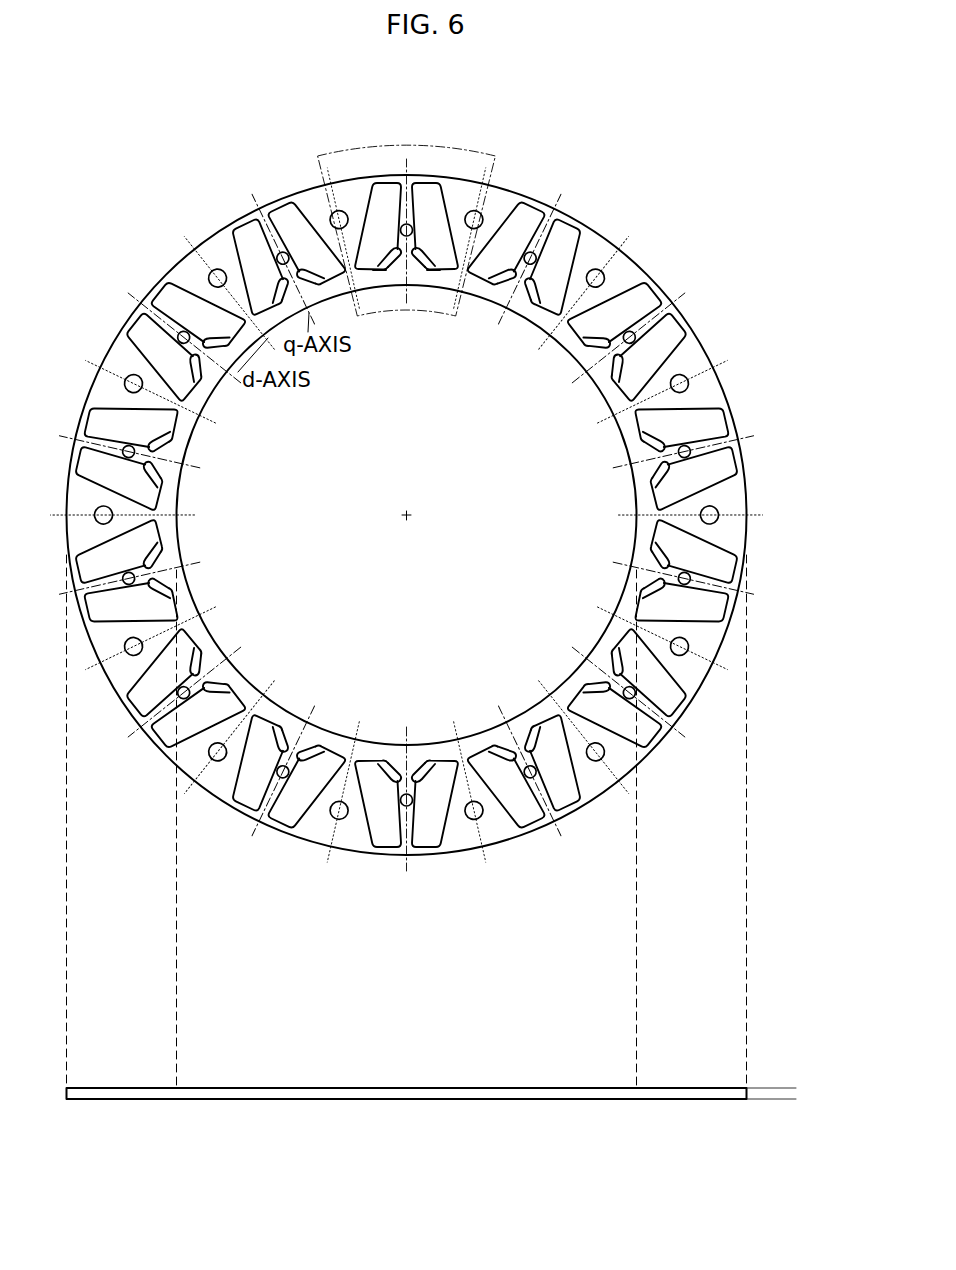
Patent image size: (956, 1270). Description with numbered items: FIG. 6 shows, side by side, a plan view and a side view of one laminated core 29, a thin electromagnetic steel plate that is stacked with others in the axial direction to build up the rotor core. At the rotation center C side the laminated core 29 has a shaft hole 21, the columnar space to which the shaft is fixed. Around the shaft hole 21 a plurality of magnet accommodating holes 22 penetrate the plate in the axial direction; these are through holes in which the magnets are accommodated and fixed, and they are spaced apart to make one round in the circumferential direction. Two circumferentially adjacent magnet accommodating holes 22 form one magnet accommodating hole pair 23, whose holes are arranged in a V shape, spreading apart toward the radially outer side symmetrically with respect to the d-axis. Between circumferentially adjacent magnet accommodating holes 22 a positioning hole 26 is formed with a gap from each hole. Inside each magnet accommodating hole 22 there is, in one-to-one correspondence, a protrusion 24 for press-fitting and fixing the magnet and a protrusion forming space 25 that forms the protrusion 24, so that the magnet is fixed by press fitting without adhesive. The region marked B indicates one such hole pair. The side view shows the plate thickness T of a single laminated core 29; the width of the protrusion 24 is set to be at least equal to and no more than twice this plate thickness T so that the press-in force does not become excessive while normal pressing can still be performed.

The laminated core 29 is at (138, 167).
The shaft hole 21 is at (186, 447).
The magnet accommodating hole 22 is at (432, 193).
The magnet accommodating hole pair 23 is at (406, 463).
The protrusion 24 is at (430, 266).
The protrusion forming space 25 is at (424, 273).
The positioning hole 26 is at (605, 274).
The enlarged region B is at (314, 160).
The rotation center C is at (409, 514).
The plate thickness T is at (786, 1058).